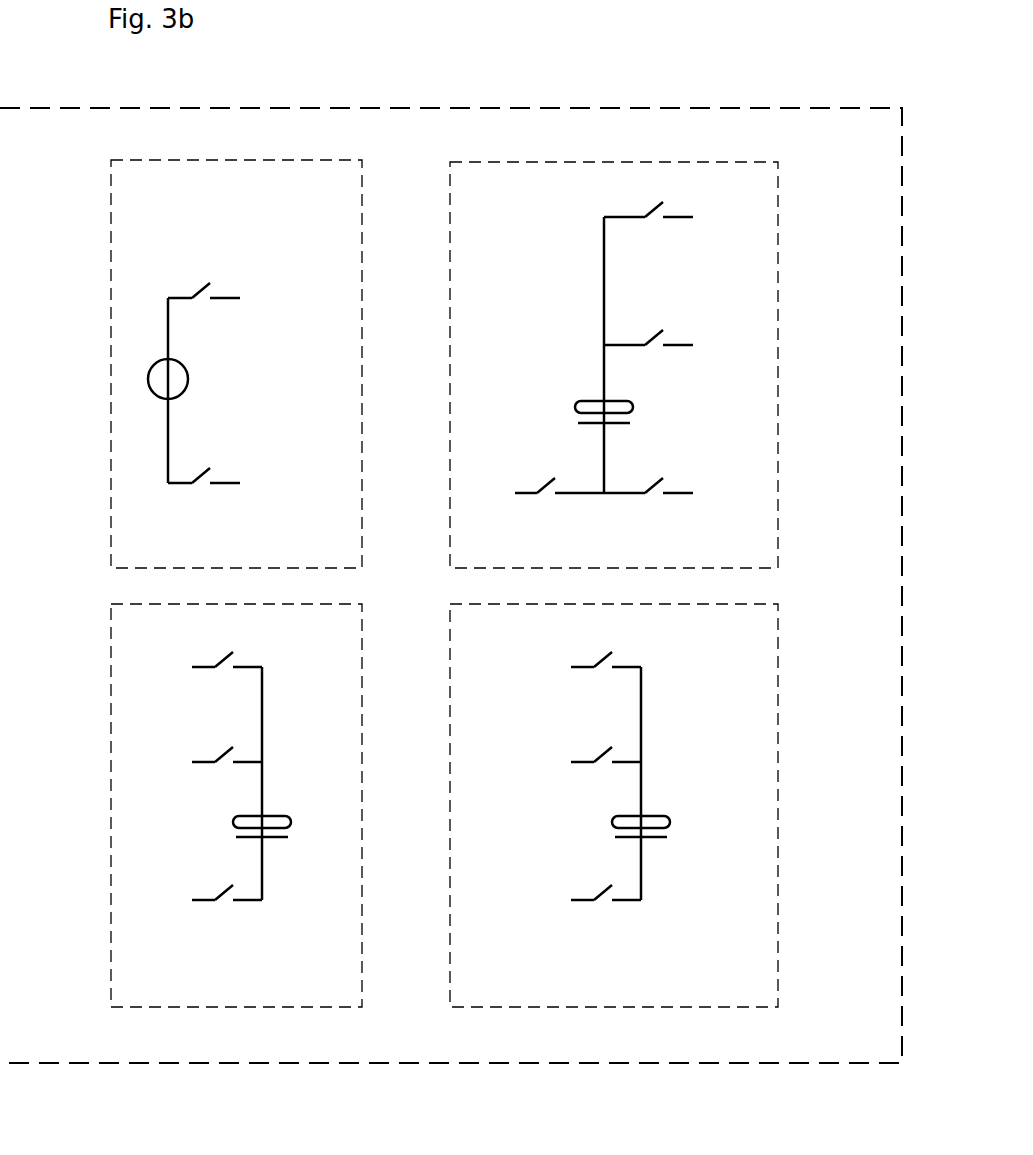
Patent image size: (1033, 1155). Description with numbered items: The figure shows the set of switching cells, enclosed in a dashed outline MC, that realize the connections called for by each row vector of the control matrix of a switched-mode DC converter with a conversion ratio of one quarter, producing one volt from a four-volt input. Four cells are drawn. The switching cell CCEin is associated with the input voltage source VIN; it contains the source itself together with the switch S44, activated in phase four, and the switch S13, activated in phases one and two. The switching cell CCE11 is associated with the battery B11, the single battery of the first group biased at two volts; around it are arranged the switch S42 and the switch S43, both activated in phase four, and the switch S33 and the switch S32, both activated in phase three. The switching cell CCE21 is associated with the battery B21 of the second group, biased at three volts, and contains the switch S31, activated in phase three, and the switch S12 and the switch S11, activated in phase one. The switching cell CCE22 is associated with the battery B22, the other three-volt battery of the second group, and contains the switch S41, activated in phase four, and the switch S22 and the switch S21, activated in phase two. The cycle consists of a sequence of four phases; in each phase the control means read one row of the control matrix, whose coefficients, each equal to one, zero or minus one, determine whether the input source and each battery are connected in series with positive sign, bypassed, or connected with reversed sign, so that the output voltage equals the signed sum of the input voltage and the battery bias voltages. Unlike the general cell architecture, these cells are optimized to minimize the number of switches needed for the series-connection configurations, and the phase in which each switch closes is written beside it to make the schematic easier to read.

The switching-cell matrix MC is at (462, 107).
The switching cell CCEin is at (110, 338).
The switching cell CCE11 is at (780, 365).
The switching cell CCE21 is at (110, 795).
The switching cell CCE22 is at (780, 800).
The input voltage source VIN is at (188, 379).
The switch S44 is at (204, 296).
The switch S13 is at (208, 480).
The switch S42 is at (648, 216).
The switch S33 is at (648, 344).
The switch S43 is at (559, 491).
The switch S32 is at (648, 491).
The battery B11 is at (627, 419).
The switch S31 is at (227, 666).
The switch S12 is at (227, 761).
The switch S11 is at (227, 899).
The battery B21 is at (284, 829).
The switch S41 is at (606, 666).
The switch S22 is at (606, 761).
The switch S21 is at (606, 899).
The battery B22 is at (663, 829).